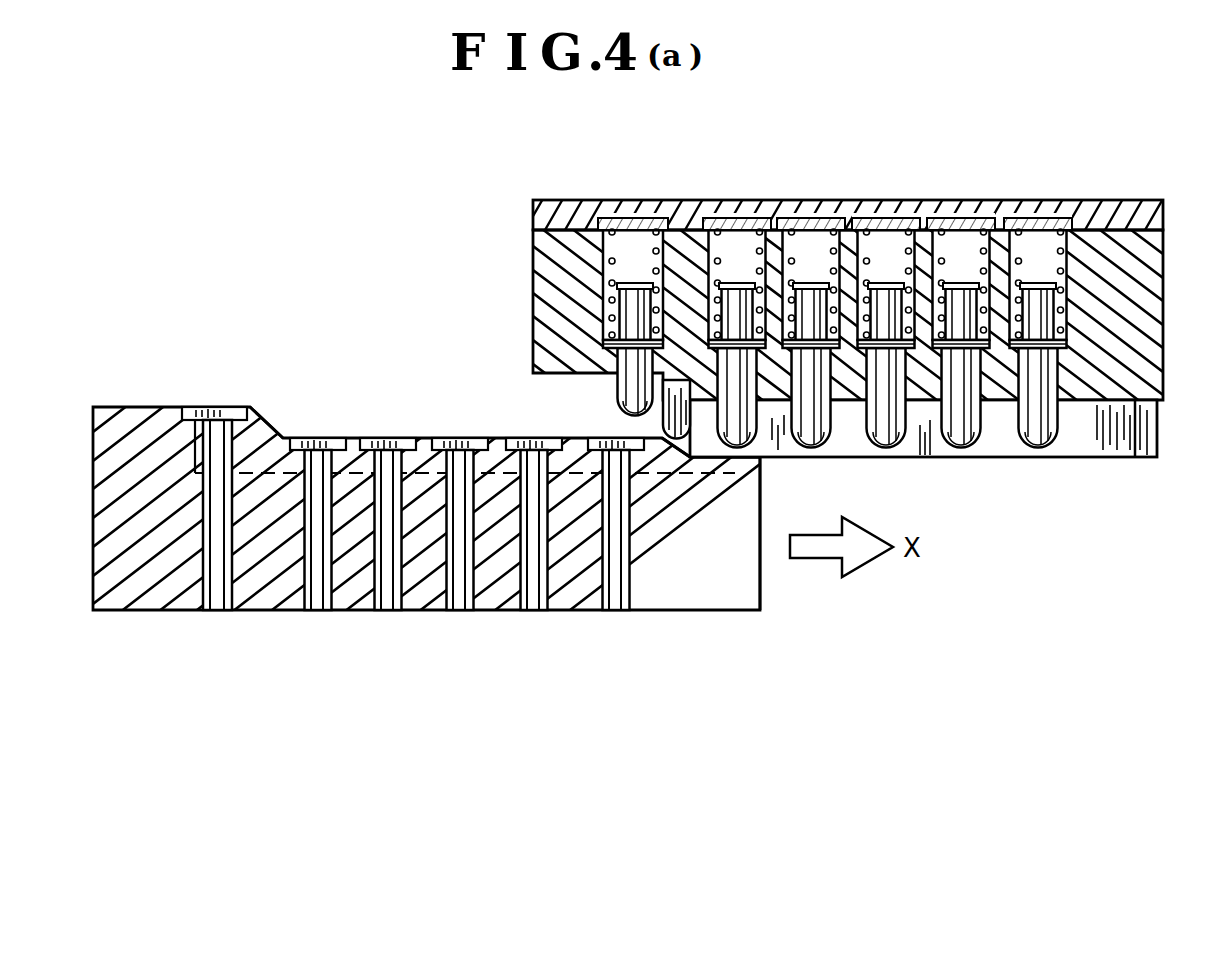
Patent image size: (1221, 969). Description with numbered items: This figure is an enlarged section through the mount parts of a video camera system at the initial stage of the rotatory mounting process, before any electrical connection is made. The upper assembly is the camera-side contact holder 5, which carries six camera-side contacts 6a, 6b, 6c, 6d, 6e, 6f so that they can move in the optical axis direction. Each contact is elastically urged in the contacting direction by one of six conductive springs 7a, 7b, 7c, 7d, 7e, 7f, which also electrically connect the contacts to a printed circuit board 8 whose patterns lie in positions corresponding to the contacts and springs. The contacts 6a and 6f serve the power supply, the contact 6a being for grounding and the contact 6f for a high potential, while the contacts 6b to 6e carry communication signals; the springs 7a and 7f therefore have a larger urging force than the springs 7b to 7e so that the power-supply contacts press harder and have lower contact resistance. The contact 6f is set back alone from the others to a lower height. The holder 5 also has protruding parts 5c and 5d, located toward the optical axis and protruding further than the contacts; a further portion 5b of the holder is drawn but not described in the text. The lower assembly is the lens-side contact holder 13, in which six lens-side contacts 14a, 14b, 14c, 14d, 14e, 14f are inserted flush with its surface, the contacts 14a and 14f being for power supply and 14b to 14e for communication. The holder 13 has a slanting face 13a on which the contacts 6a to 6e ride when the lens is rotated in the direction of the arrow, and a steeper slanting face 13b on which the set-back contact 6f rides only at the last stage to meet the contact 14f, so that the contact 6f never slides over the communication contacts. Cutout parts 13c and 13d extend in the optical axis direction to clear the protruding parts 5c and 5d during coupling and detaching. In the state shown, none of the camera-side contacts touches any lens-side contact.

The camera-side contact holder 5 is at (1160, 380).
The projection of upper block 5b is at (665, 445).
The protruding part 5c is at (1103, 440).
The protruding part 5d is at (1140, 452).
The camera-side contact 6a is at (1060, 430).
The camera-side contact 6b is at (980, 432).
The camera-side contact 6c is at (908, 432).
The camera-side contact 6d is at (832, 440).
The camera-side contact 6e is at (760, 442).
The camera-side contact 6f is at (606, 342).
The conductive spring 7a is at (1030, 222).
The conductive spring 7b is at (950, 222).
The conductive spring 7c is at (875, 222).
The conductive spring 7d is at (800, 222).
The conductive spring 7e is at (730, 222).
The conductive spring 7f is at (632, 222).
The printed circuit board 8 is at (1120, 212).
The lens-side contact holder 13 is at (148, 592).
The slanting face 13a is at (705, 460).
The slanting face 13b is at (264, 426).
The cutout part 13c is at (346, 468).
The cutout part 13d is at (740, 462).
The lens-side contact 14a is at (598, 437).
The lens-side contact 14b is at (522, 437).
The lens-side contact 14c is at (448, 437).
The lens-side contact 14d is at (394, 437).
The lens-side contact 14e is at (326, 437).
The lens-side contact 14f is at (196, 406).